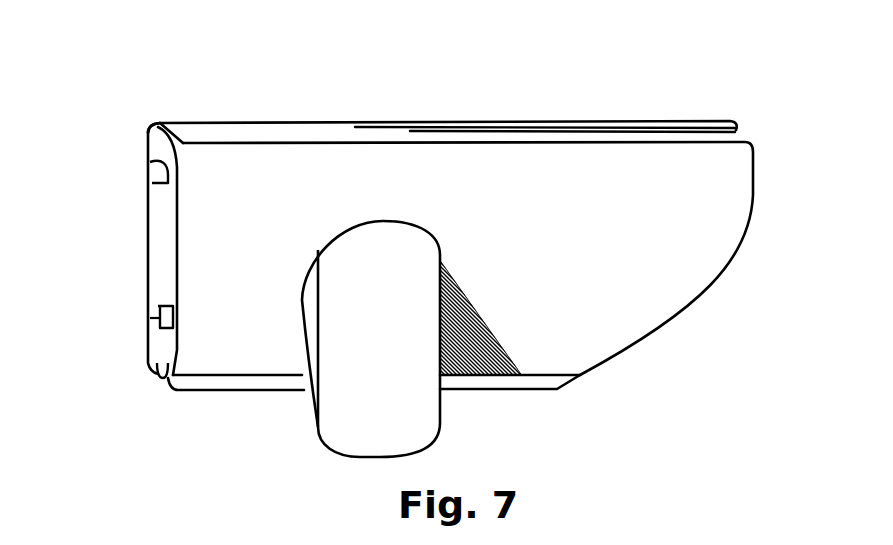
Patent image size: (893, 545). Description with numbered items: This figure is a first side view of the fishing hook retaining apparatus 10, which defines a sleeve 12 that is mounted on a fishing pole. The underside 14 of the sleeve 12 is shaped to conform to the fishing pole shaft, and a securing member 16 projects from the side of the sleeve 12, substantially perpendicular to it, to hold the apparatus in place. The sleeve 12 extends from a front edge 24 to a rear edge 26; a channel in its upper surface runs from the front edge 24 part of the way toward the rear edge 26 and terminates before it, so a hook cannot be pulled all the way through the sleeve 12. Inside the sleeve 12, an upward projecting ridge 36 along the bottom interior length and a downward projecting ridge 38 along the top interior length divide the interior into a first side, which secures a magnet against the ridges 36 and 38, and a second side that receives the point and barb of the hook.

The fishing hook retaining apparatus 10 is at (229, 59).
The sleeve 12 is at (665, 272).
The underside 14 is at (160, 378).
The securing member 16 is at (405, 397).
The front edge 24 is at (730, 123).
The rear edge 26 is at (155, 137).
The upward projecting ridge 36 is at (162, 305).
The downward projecting ridge 38 is at (150, 183).